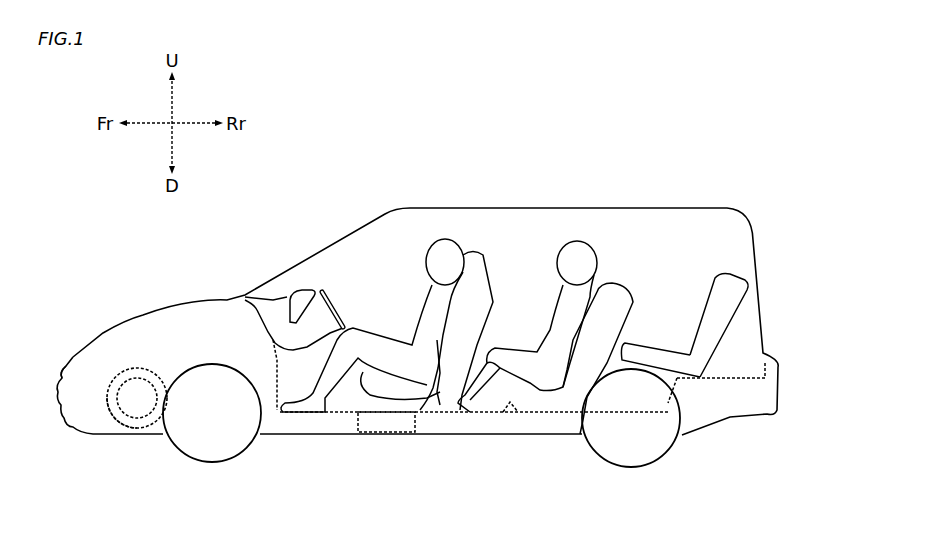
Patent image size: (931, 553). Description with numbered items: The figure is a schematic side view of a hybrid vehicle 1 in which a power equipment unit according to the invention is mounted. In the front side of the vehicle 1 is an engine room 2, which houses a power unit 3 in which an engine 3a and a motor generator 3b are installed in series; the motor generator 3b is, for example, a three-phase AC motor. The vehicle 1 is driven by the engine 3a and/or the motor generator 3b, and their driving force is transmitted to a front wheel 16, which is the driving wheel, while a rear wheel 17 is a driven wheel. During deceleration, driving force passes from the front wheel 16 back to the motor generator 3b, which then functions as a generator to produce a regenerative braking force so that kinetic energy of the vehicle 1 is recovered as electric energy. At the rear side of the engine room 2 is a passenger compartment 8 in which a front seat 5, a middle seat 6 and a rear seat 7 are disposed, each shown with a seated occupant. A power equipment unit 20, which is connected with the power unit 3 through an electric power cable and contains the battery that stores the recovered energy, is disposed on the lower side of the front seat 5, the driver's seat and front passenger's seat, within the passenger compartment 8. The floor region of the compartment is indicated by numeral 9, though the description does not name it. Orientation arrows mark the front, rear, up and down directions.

The vehicle 1 is at (490, 148).
The engine room 2 is at (95, 375).
The power unit 3 is at (127, 370).
The engine 3a is at (112, 418).
The motor generator 3b is at (140, 407).
The front seat 5 is at (450, 368).
The middle seat 6 is at (572, 390).
The rear seat 7 is at (713, 333).
The passenger compartment 8 is at (527, 257).
The floor panel 9 is at (515, 420).
The front wheel 16 is at (210, 443).
The rear wheel 17 is at (630, 452).
The power equipment unit 20 is at (375, 422).